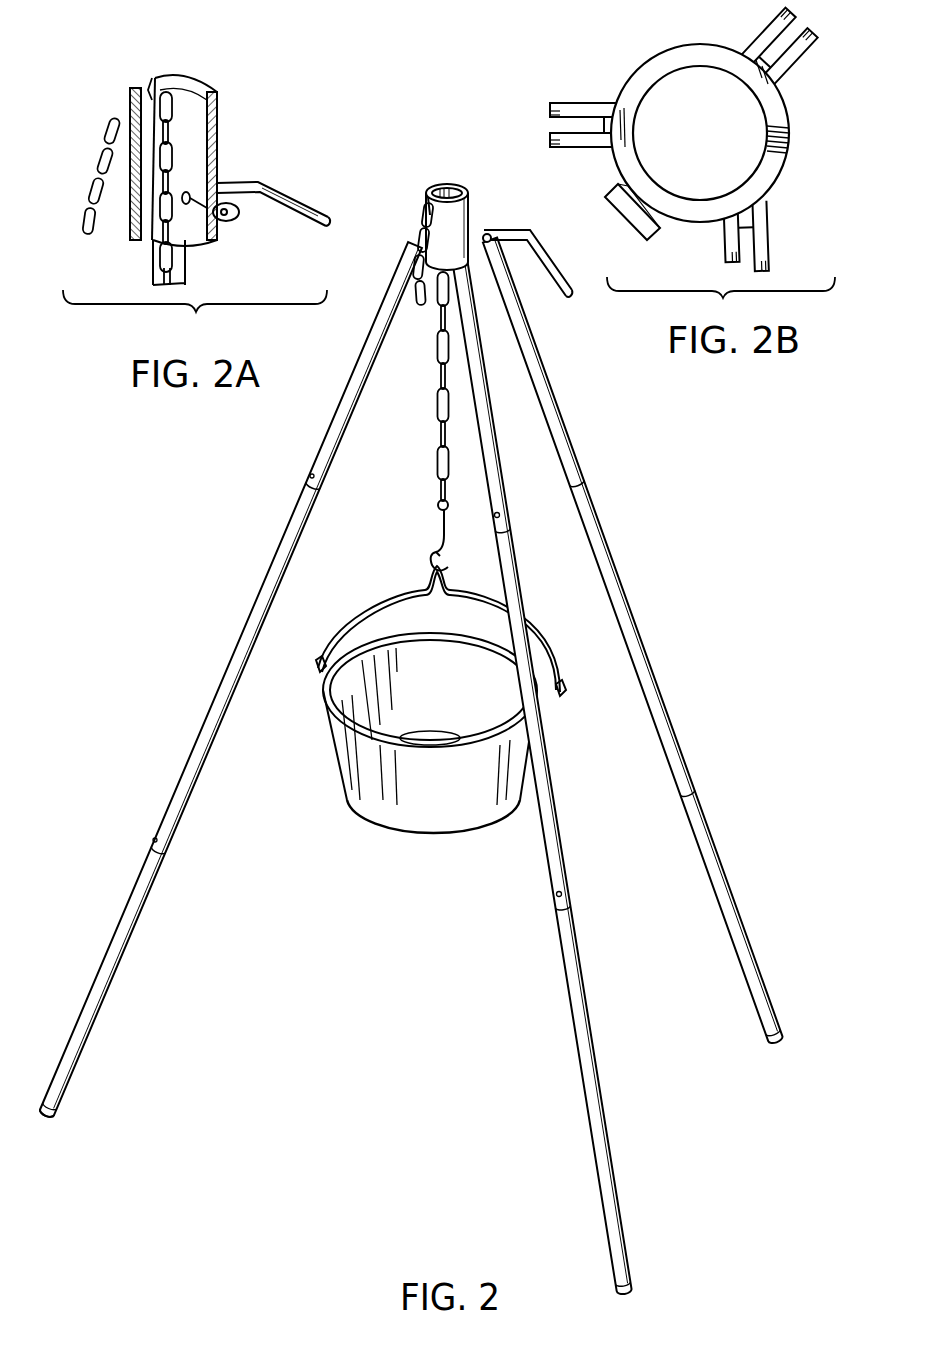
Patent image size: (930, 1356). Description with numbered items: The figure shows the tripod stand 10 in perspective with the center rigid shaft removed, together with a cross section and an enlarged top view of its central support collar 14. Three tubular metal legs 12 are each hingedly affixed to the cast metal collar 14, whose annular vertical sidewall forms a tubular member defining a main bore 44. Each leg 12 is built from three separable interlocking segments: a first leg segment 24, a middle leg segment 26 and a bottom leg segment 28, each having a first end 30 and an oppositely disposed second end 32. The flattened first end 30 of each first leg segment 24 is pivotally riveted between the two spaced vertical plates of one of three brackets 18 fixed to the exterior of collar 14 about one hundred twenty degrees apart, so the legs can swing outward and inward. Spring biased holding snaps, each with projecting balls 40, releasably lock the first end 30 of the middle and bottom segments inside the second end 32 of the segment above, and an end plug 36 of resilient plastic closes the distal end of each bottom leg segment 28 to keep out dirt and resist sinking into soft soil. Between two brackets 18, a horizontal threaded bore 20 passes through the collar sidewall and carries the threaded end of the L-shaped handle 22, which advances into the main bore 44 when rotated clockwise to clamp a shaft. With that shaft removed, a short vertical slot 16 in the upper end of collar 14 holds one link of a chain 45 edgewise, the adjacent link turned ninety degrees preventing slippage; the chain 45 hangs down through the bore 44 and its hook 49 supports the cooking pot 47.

In FIG. 2, the tripod stand 10 is at (610, 576).
In FIG. 2, the leg 12 is at (235, 648).
In FIG. 2, the support collar 14 is at (425, 198).
In FIG. 2A, the support collar 14 is at (217, 135).
In FIG. 2B, the support collar 14 is at (606, 166).
In FIG. 2, the vertical slot 16 is at (430, 192).
In FIG. 2A, the vertical slot 16 is at (148, 80).
In FIG. 2B, the vertical slot 16 is at (767, 140).
In FIG. 2A, the bracket 18 is at (238, 216).
In FIG. 2B, the bracket 18 is at (555, 102).
In FIG. 2A, the threaded bore 20 is at (213, 200).
In FIG. 2B, the threaded bore 20 is at (623, 213).
In FIG. 2, the L-shaped handle 22 is at (570, 298).
In FIG. 2A, the L-shaped handle 22 is at (292, 203).
In FIG. 2, the first leg segment 24 is at (332, 422).
In FIG. 2, the middle leg segment 26 is at (663, 662).
In FIG. 2, the bottom leg segment 28 is at (115, 982).
In FIG. 2, the first end 30 is at (407, 242).
In FIG. 2, the second end 32 is at (337, 460).
In FIG. 2, the end plug 36 is at (44, 1124).
In FIG. 2, the ball 40 is at (312, 476).
In FIG. 2, the main bore 44 is at (447, 183).
In FIG. 2A, the main bore 44 is at (184, 92).
In FIG. 2B, the main bore 44 is at (690, 72).
In FIG. 2, the chain 45 is at (432, 470).
In FIG. 2A, the chain 45 is at (98, 177).
In FIG. 2, the cooking pot 47 is at (365, 823).
In FIG. 2, the hook 49 is at (436, 543).